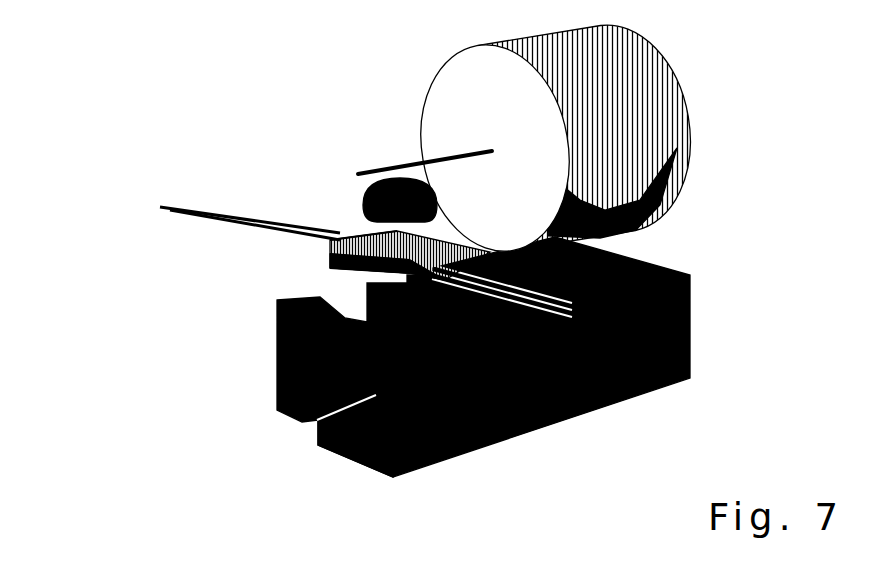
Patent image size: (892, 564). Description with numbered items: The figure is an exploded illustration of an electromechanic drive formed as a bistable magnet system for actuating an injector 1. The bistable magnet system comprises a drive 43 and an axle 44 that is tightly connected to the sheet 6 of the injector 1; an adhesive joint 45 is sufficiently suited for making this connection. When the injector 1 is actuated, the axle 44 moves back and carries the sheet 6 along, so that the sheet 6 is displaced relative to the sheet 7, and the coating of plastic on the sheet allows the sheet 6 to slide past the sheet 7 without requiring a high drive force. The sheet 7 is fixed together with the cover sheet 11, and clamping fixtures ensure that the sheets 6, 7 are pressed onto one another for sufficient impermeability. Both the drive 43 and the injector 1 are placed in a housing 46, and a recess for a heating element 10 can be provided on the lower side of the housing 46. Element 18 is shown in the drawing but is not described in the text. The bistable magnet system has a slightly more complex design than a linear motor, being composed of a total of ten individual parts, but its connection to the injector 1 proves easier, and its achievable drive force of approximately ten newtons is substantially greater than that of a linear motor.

The injector 1 is at (296, 270).
The sheet 6 is at (340, 252).
The sheet 7 is at (340, 258).
The heating element 10 is at (317, 447).
The cover sheet 11 is at (340, 272).
The connection wires 18 is at (340, 222).
The drive 43 is at (612, 100).
The axle 44 is at (412, 158).
The adhesive joint 45 is at (372, 184).
The housing 46 is at (688, 333).